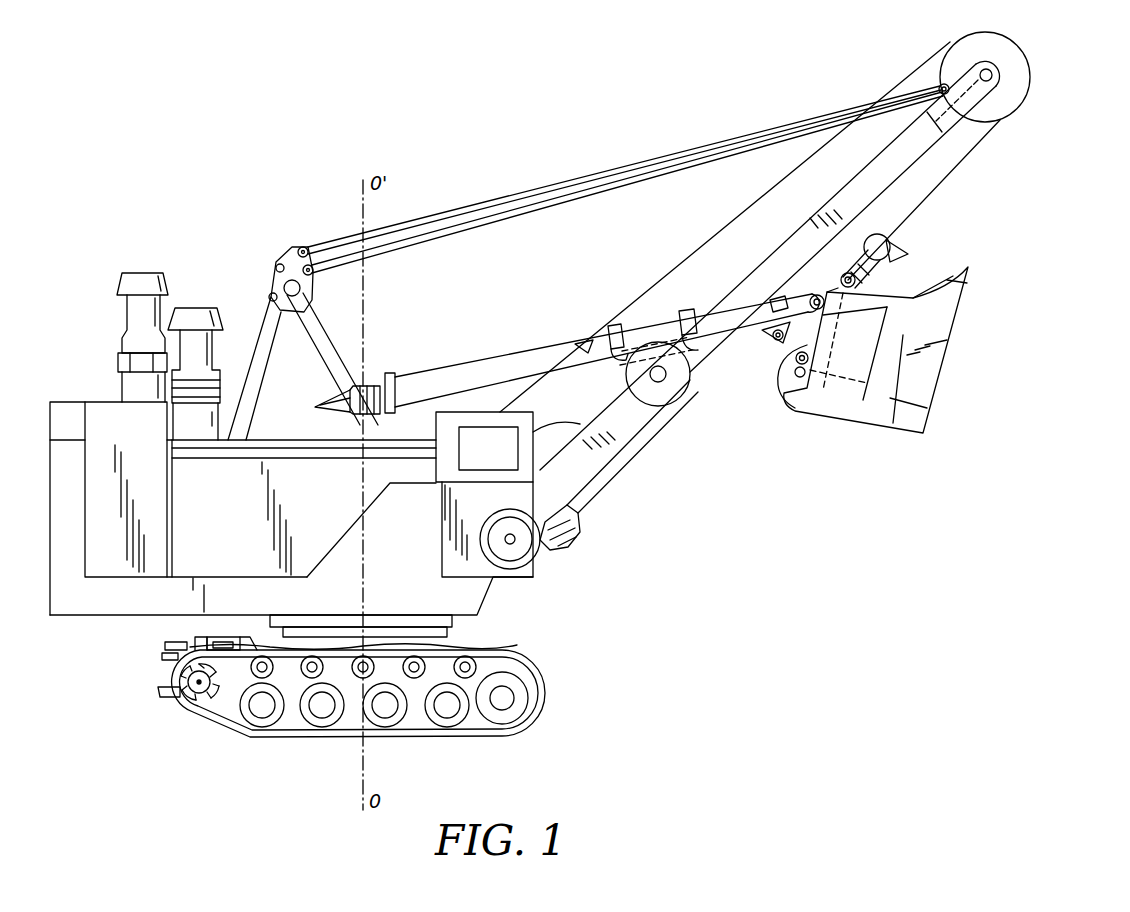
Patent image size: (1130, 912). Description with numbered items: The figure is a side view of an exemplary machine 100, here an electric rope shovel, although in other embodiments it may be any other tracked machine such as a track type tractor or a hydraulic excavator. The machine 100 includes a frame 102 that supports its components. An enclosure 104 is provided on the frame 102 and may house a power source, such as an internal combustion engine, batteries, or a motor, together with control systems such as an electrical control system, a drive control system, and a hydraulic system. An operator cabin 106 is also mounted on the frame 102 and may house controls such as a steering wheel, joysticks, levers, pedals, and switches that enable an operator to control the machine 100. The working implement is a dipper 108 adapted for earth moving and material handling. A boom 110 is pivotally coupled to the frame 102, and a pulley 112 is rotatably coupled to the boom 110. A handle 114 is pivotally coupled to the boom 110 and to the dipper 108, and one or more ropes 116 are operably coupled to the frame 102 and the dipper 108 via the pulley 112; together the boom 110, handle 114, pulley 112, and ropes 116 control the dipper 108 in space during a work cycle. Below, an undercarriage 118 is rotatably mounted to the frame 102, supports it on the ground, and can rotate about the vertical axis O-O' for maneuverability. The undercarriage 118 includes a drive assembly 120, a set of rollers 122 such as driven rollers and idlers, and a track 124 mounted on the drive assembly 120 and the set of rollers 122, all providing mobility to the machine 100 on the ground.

The machine 100 is at (405, 88).
The frame 102 is at (92, 598).
The enclosure 104 is at (295, 431).
The operator cabin 106 is at (585, 428).
The dipper 108 is at (935, 377).
The boom 110 is at (763, 203).
The pulley 112 is at (1026, 67).
The handle 114 is at (486, 356).
The ropes 116 is at (963, 167).
The undercarriage 118 is at (442, 644).
The drive assembly 120 is at (196, 690).
The set of rollers 122 is at (322, 728).
The track 124 is at (258, 738).